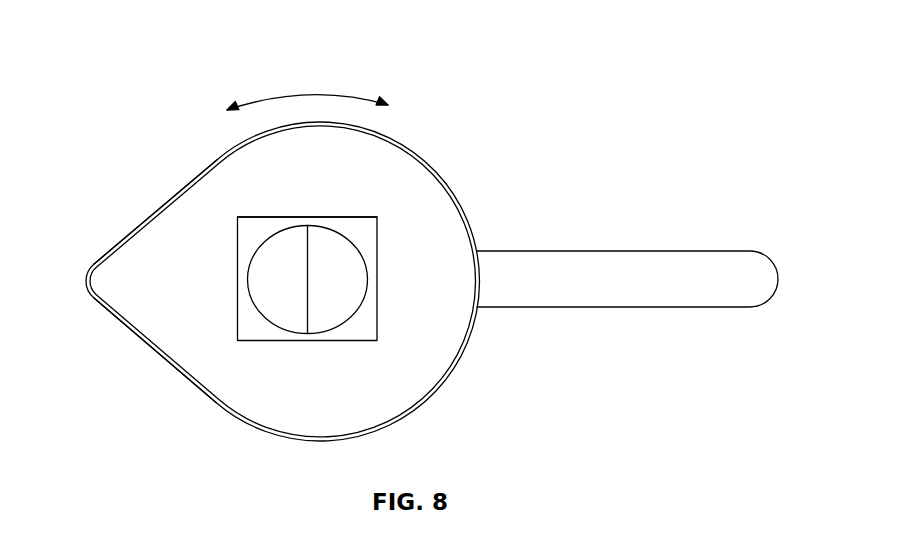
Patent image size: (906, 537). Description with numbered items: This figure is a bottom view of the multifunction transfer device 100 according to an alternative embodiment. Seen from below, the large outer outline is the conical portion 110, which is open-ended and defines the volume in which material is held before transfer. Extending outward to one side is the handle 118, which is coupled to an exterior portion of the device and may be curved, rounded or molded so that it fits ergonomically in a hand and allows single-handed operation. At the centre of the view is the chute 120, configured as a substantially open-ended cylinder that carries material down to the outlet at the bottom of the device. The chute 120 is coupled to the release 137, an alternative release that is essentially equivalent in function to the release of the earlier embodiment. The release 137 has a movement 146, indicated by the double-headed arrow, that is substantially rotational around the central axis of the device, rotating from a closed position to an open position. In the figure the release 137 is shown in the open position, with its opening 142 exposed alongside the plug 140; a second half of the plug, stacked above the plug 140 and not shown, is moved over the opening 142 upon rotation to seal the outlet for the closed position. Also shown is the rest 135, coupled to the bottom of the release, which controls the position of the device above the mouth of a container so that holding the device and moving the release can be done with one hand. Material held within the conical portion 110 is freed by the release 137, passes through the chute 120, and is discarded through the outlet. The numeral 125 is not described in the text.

The multifunction transfer device 100 is at (130, 106).
The conical portion 110 is at (239, 153).
The handle 118 is at (702, 249).
The chute 120 is at (240, 287).
The alignment mark 125 is at (280, 221).
The rest 135 is at (245, 246).
The release 137 is at (338, 210).
The plug 140 is at (330, 263).
The opening 142 is at (278, 302).
The movement 146 is at (312, 93).